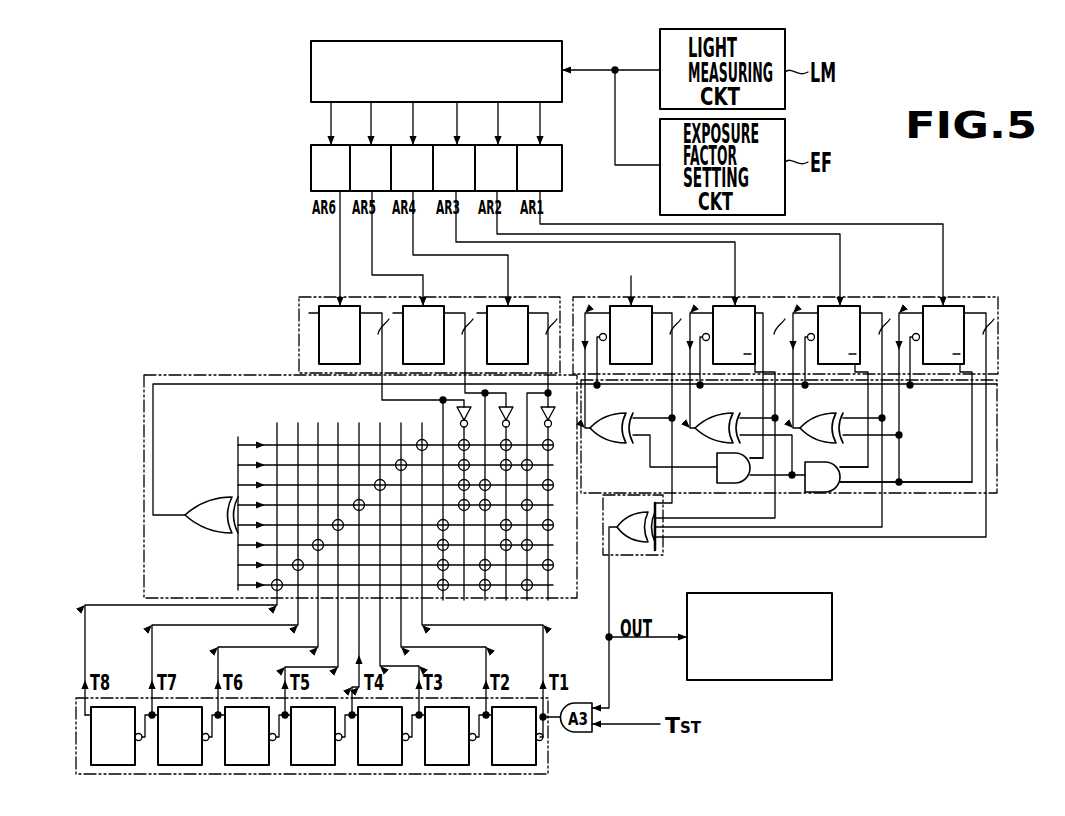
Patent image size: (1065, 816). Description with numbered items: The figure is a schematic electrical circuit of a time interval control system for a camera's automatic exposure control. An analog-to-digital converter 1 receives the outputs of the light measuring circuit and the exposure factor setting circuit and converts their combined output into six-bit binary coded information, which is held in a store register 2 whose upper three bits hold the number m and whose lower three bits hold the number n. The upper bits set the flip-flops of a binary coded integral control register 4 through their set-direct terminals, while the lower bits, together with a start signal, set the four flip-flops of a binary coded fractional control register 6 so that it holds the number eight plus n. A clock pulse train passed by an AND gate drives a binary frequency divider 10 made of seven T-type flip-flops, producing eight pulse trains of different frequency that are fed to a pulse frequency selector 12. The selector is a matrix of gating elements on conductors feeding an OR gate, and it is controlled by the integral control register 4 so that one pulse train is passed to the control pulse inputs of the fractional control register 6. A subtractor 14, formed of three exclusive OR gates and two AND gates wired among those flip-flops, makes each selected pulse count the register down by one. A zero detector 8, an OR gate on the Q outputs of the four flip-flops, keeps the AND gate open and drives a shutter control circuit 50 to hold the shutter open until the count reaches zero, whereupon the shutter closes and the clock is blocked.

The analog-to-digital converter 1 is at (311, 70).
The store register 2 is at (311, 166).
The binary coded integral control register 4 is at (299, 318).
The binary coded fractional control register 6 is at (998, 318).
The zero detector 8 is at (651, 556).
The binary frequency divider 10 is at (76, 714).
The pulse frequency selector 12 is at (193, 375).
The subtractor 14 is at (997, 420).
The shutter control circuit 50 is at (832, 631).